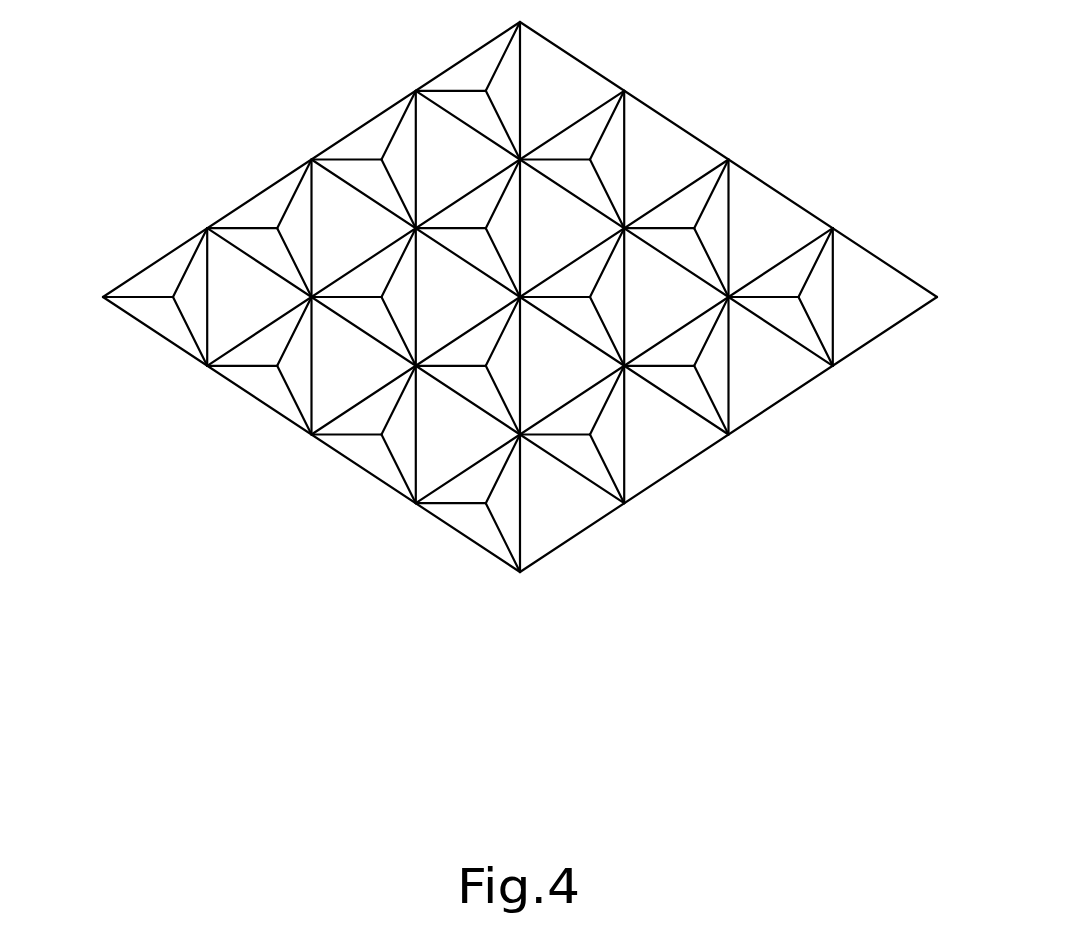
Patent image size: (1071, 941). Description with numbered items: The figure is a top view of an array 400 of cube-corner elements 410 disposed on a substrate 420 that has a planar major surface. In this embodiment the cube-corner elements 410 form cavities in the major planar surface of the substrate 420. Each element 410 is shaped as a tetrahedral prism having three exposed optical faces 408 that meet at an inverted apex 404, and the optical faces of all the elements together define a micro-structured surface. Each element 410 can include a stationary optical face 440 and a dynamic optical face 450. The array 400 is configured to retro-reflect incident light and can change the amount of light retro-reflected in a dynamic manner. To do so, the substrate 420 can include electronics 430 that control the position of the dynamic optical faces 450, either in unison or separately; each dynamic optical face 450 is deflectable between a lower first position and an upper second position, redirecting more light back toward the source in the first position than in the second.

The array 400 is at (222, 135).
The inverted apex 404 is at (162, 270).
The exposed optical faces 408 is at (298, 377).
The cube-corner elements 410 is at (372, 458).
The substrate 420 is at (432, 118).
The electronics 430 is at (600, 87).
The stationary optical face 440 is at (475, 68).
The dynamic optical face 450 is at (512, 68).